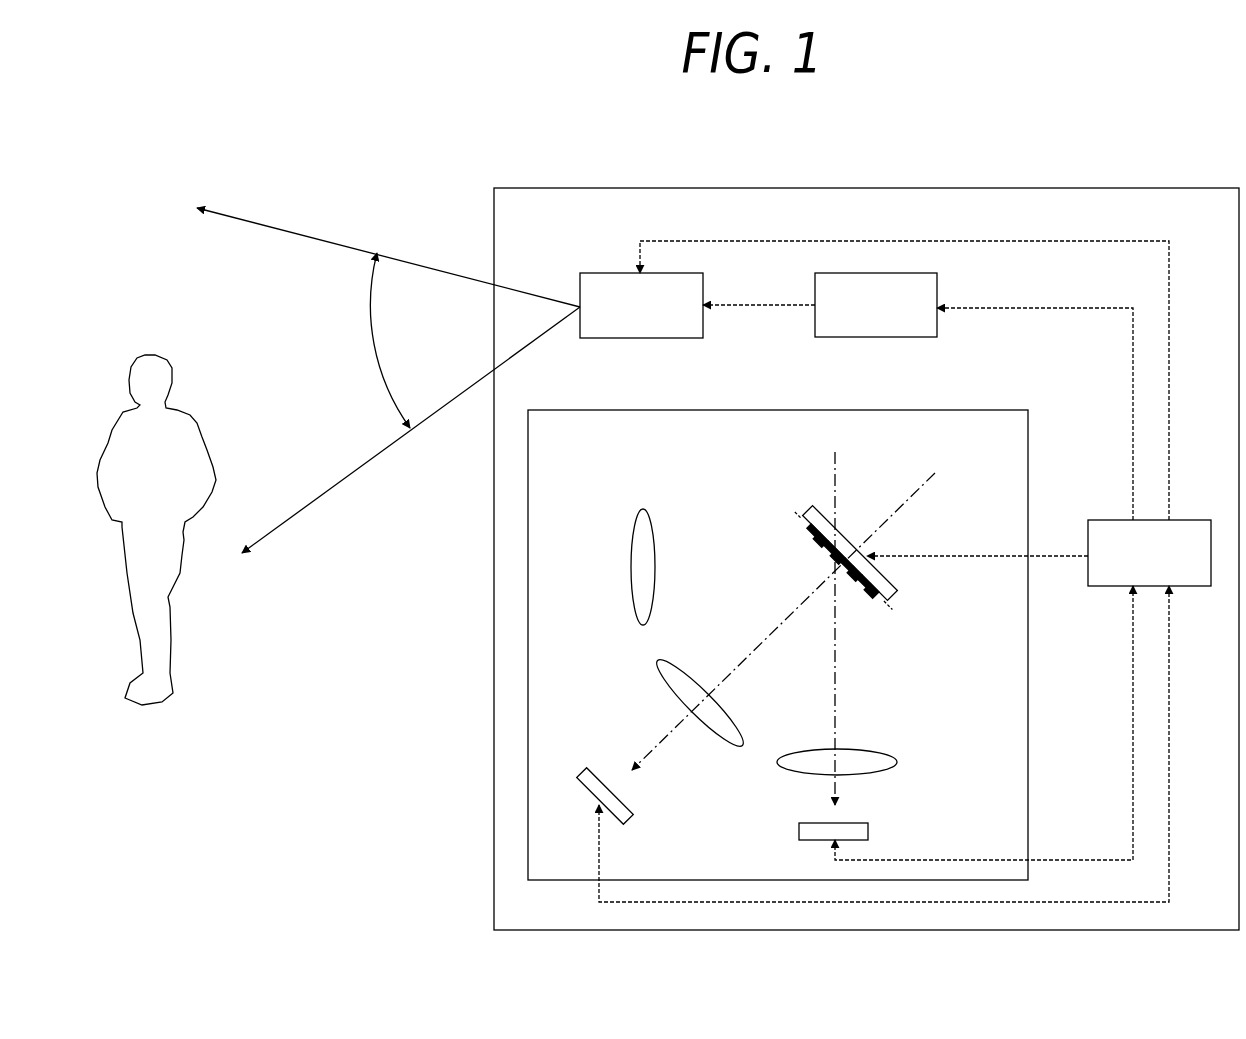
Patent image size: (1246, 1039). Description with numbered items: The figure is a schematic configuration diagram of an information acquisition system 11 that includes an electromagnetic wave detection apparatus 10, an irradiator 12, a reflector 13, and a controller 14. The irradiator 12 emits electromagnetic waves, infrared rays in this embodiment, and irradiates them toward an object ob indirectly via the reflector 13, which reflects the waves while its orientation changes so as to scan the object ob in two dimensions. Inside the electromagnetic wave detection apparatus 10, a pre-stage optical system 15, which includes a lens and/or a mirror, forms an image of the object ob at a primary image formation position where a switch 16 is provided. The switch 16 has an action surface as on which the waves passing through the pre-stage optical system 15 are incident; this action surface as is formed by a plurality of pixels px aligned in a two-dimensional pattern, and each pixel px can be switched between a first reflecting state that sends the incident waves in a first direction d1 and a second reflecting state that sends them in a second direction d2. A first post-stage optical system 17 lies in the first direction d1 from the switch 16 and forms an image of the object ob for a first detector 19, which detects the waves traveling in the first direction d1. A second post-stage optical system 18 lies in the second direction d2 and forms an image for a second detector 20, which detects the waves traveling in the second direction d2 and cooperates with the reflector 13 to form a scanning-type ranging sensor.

The electromagnetic wave detection apparatus 10 is at (712, 409).
The information acquisition system 11 is at (494, 207).
The irradiator 12 is at (880, 337).
The reflector 13 is at (640, 338).
The controller 14 is at (1105, 586).
The pre-stage optical system 15 is at (632, 532).
The switch 16 is at (852, 540).
The first post-stage optical system 17 is at (660, 672).
The second post-stage optical system 18 is at (897, 760).
The first detector 19 is at (620, 822).
The second detector 20 is at (868, 832).
The object ob is at (197, 443).
The pixel px is at (824, 550).
The action surface as is at (893, 619).
The first direction d1 is at (670, 733).
The second direction d2 is at (835, 700).